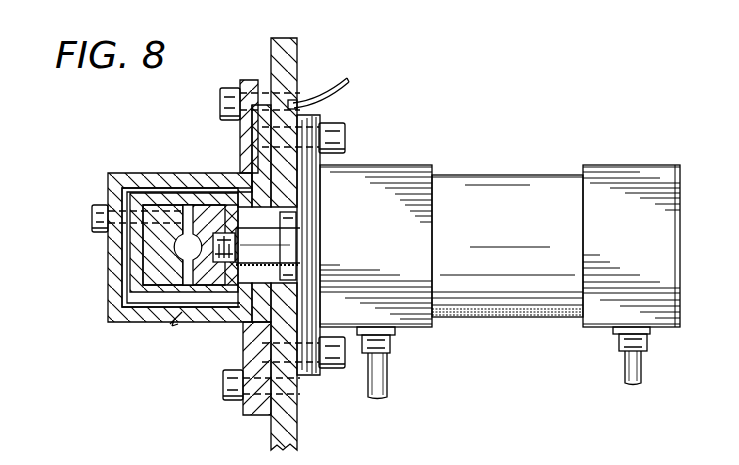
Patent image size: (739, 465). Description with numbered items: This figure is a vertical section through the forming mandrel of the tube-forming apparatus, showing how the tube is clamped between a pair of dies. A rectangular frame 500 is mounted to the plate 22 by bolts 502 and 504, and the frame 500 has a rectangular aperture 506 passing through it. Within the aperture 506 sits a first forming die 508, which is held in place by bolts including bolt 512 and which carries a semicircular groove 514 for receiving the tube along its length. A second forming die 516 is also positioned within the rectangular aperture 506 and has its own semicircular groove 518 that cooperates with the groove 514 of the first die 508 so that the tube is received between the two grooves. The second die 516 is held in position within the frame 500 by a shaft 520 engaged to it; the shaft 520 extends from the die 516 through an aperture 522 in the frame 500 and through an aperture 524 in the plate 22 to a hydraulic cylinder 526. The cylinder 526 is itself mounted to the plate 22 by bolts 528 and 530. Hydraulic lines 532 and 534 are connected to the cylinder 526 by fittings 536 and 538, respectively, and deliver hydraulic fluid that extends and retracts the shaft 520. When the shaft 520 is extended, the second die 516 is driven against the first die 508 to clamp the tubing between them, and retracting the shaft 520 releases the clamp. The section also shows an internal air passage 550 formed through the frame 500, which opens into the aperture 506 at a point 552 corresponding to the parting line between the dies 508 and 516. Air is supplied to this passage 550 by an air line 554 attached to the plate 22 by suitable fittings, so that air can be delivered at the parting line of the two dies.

The plate 22 is at (296, 62).
The rectangular frame 500 is at (128, 178).
The bolt 502 is at (220, 105).
The bolt 504 is at (223, 384).
The rectangular aperture 506 is at (148, 300).
The first forming die 508 is at (150, 245).
The bolt 512 is at (94, 208).
The semicircular groove 514 is at (172, 255).
The second forming die 516 is at (228, 243).
The semicircular groove 518 is at (212, 300).
The shaft 520 is at (240, 240).
The aperture 522 is at (282, 252).
The aperture 524 is at (305, 272).
The hydraulic cylinder 526 is at (533, 176).
The bolt 528 is at (340, 370).
The bolt 530 is at (345, 128).
The hydraulic line 532 is at (388, 374).
The hydraulic line 534 is at (640, 378).
The fitting 536 is at (392, 342).
The fitting 538 is at (617, 344).
The air passage 550 is at (188, 185).
The point 552 is at (172, 324).
The air line 554 is at (348, 82).